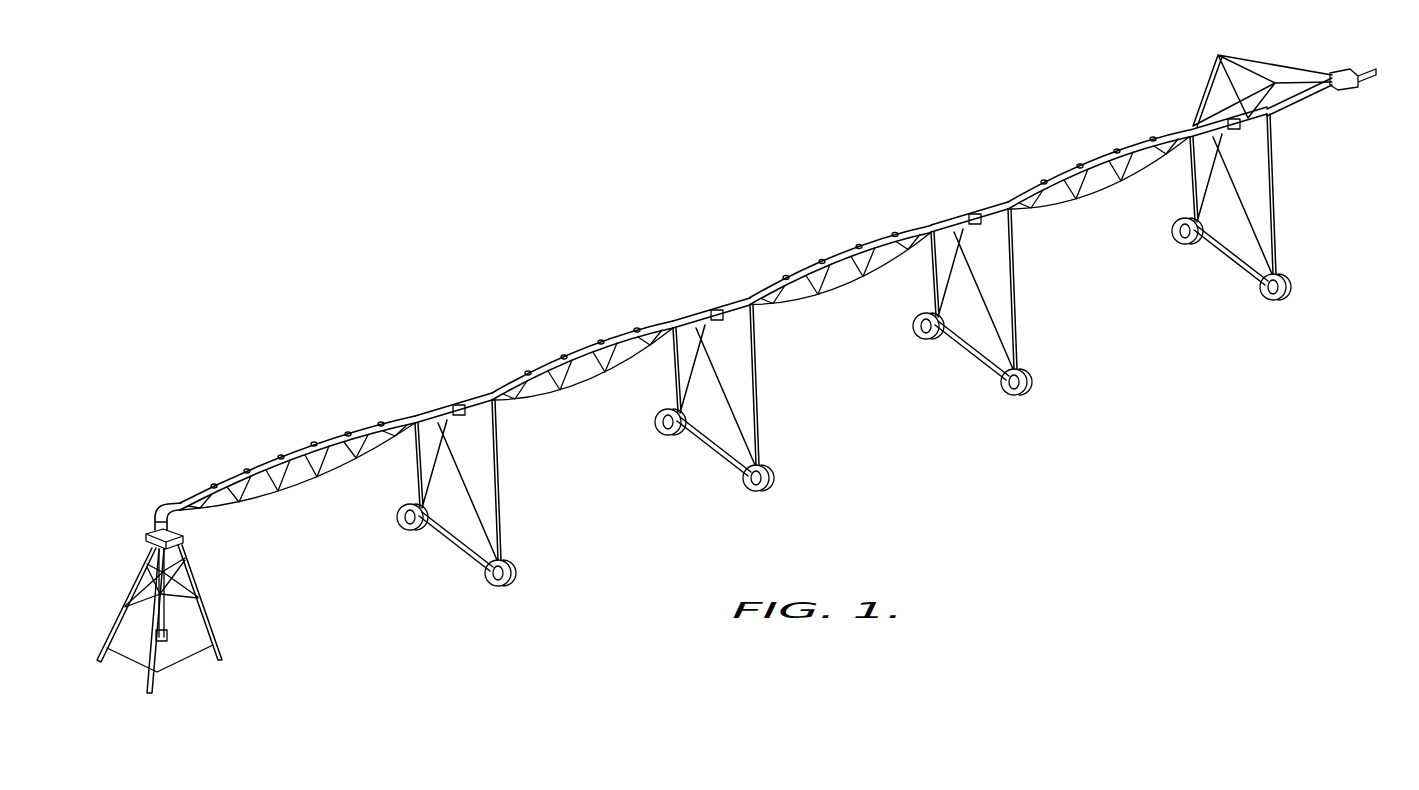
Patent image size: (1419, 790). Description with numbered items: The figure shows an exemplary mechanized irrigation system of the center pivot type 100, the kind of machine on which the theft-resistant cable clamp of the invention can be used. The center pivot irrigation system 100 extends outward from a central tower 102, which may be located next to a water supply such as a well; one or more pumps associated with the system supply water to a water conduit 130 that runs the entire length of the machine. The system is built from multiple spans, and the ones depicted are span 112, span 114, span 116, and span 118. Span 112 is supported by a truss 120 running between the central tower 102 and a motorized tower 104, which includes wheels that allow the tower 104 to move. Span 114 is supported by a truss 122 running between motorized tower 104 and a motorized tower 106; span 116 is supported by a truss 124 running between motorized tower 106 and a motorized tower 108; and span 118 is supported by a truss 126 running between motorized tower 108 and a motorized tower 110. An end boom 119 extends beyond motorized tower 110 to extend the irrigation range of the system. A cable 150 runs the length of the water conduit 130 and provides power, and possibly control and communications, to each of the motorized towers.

The center pivot irrigation system 100 is at (432, 180).
The central tower 102 is at (122, 582).
The motorized tower 104 is at (452, 540).
The motorized tower 106 is at (712, 444).
The motorized tower 108 is at (972, 350).
The motorized tower 110 is at (1235, 262).
The span 112 is at (278, 444).
The span 114 is at (582, 336).
The span 116 is at (840, 243).
The span 118 is at (1098, 148).
The end boom 119 is at (1300, 108).
The truss 120 is at (335, 478).
The truss 122 is at (596, 385).
The truss 124 is at (856, 290).
The truss 126 is at (1110, 196).
The water conduit 130 is at (328, 440).
The cable 150 is at (382, 416).